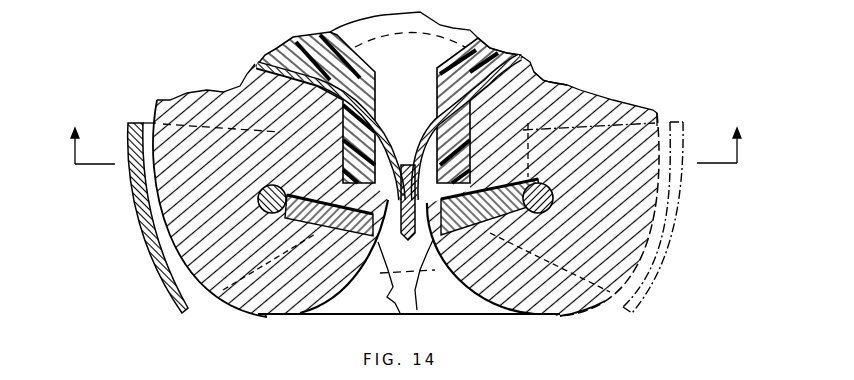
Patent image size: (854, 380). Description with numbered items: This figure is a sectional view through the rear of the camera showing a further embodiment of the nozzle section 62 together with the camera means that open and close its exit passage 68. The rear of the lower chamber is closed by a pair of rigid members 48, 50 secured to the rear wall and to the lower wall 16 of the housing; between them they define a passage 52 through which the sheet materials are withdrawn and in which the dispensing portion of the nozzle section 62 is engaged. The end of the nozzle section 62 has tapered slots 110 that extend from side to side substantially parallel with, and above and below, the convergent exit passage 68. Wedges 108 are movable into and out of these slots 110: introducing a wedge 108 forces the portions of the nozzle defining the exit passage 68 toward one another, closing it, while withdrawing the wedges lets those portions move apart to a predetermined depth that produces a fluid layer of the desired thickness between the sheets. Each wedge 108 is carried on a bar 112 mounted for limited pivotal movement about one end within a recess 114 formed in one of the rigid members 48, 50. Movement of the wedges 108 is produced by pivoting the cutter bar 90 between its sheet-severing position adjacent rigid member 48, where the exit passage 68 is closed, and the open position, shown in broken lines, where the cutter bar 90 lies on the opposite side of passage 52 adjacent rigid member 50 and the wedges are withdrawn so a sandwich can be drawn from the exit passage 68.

The lower wall 16 is at (407, 137).
The rigid member 48 is at (236, 306).
The rigid member 50 is at (598, 304).
The passage 52 is at (399, 314).
The nozzle section 62 is at (470, 168).
The exit passage 68 is at (399, 233).
The cutter bar 90 is at (152, 250).
The wedge 108 is at (343, 178).
The tapered slot 110 is at (362, 185).
The bar 112 is at (300, 245).
The recess 114 is at (318, 238).